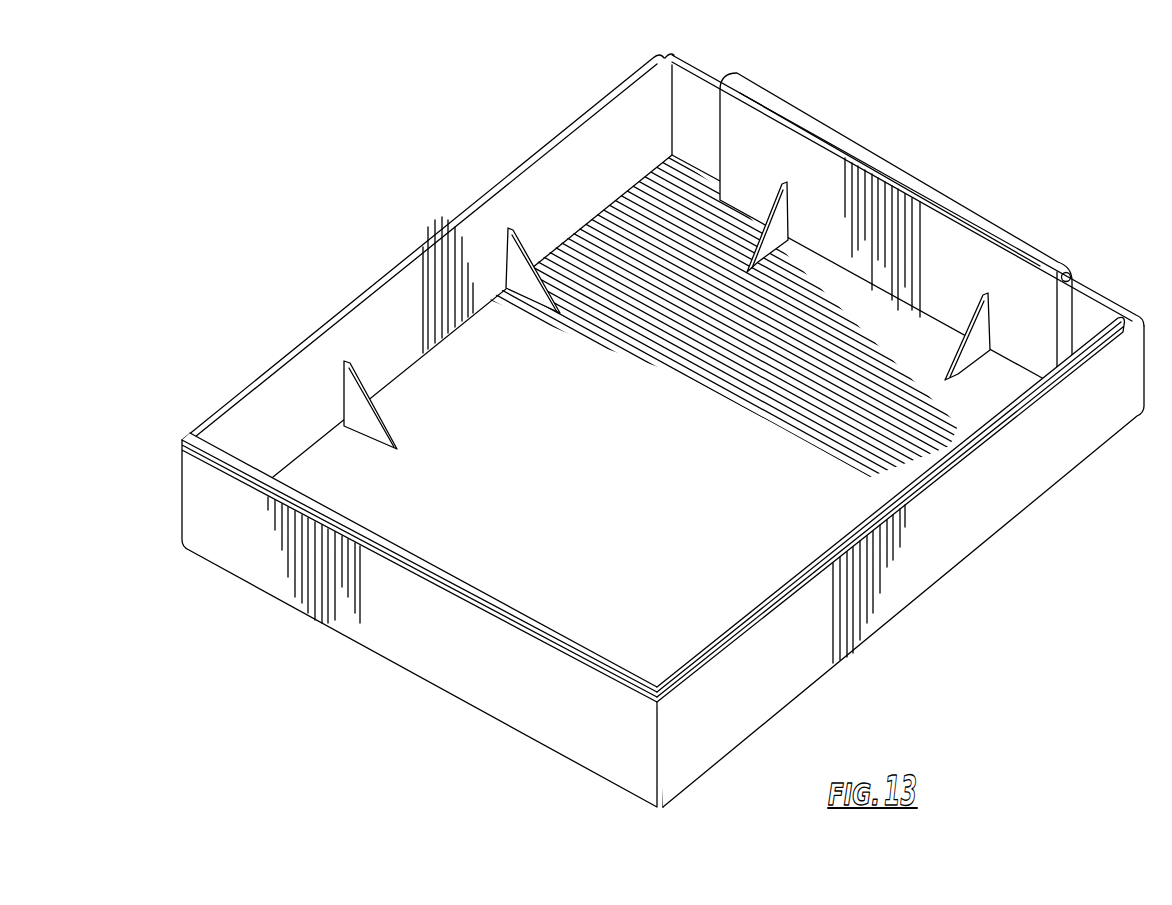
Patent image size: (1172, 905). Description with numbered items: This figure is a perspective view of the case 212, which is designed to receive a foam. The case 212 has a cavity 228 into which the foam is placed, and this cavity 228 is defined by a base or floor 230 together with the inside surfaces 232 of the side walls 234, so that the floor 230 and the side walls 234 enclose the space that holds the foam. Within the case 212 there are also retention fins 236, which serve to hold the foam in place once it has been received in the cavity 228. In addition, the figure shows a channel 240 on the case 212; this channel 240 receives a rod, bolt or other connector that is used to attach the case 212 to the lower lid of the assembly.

The case 212 is at (663, 403).
The cavity 228 is at (424, 388).
The base or floor 230 is at (730, 603).
The inside surfaces 232 is at (598, 128).
The side walls 234 is at (478, 688).
The retention fins 236 is at (513, 260).
The channel 240 is at (1073, 277).